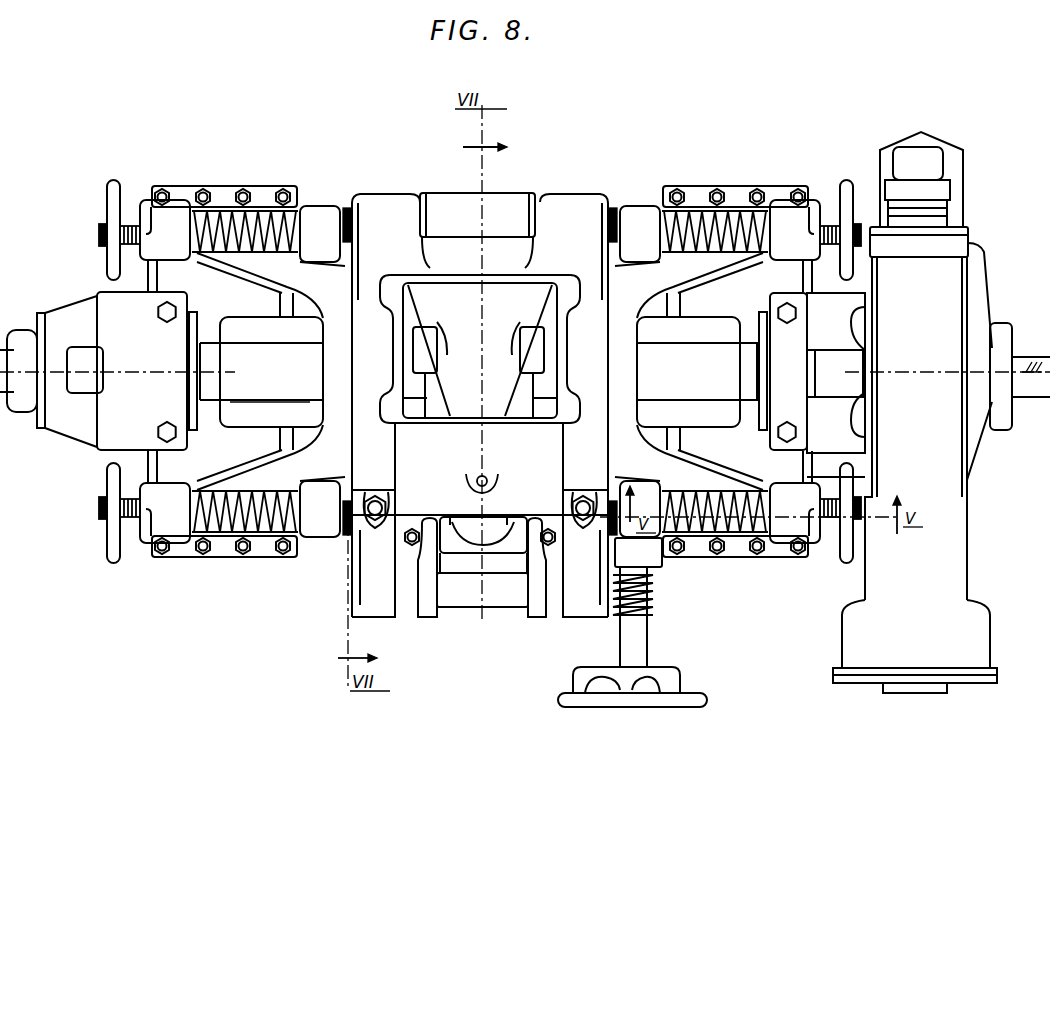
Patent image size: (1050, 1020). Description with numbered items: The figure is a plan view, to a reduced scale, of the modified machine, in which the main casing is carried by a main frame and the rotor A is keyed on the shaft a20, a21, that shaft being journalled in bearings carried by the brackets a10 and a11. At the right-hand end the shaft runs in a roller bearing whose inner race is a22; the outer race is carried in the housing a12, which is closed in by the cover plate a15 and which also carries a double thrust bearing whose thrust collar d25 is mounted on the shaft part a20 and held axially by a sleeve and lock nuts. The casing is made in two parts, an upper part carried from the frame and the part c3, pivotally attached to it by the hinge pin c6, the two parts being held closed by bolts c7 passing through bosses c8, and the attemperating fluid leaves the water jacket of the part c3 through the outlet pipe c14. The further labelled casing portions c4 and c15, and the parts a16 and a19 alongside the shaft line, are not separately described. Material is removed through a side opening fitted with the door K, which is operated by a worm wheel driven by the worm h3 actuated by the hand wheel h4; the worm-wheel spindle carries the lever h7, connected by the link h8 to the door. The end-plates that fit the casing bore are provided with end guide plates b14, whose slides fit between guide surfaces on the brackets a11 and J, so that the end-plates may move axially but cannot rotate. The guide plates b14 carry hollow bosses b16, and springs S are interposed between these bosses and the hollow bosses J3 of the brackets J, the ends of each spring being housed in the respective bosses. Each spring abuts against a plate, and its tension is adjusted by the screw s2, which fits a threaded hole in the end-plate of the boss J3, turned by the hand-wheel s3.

The spring S is at (250, 212).
The bracket J is at (223, 193).
The hollow boss J3 is at (171, 248).
The hollow boss b16 is at (322, 210).
The screw s2 is at (131, 250).
The hand-wheel s3 is at (107, 190).
The end guide plate b14 is at (267, 263).
The hinge pin c6 is at (352, 218).
The housing a12 is at (158, 397).
The cover plate a15 is at (193, 387).
The bracket a10 is at (216, 332).
The shaft part a20 is at (281, 393).
The main body c4 is at (390, 198).
The window frame c15 is at (405, 312).
The rotor A is at (508, 344).
The casing part c3 is at (410, 450).
The outlet pipe c14 is at (485, 476).
The bolts c7 is at (378, 520).
The bosses c8 is at (395, 493).
The door K is at (490, 517).
The link h8 is at (463, 523).
The lever h7 is at (425, 600).
The bracket a11 is at (695, 308).
The right shaft a19 is at (763, 357).
The right hub block a16 is at (797, 332).
The shaft part a21 is at (677, 393).
The thrust collar d25 is at (943, 287).
The inner race a22 is at (1023, 353).
The worm h3 is at (636, 602).
The hand wheel h4 is at (700, 693).